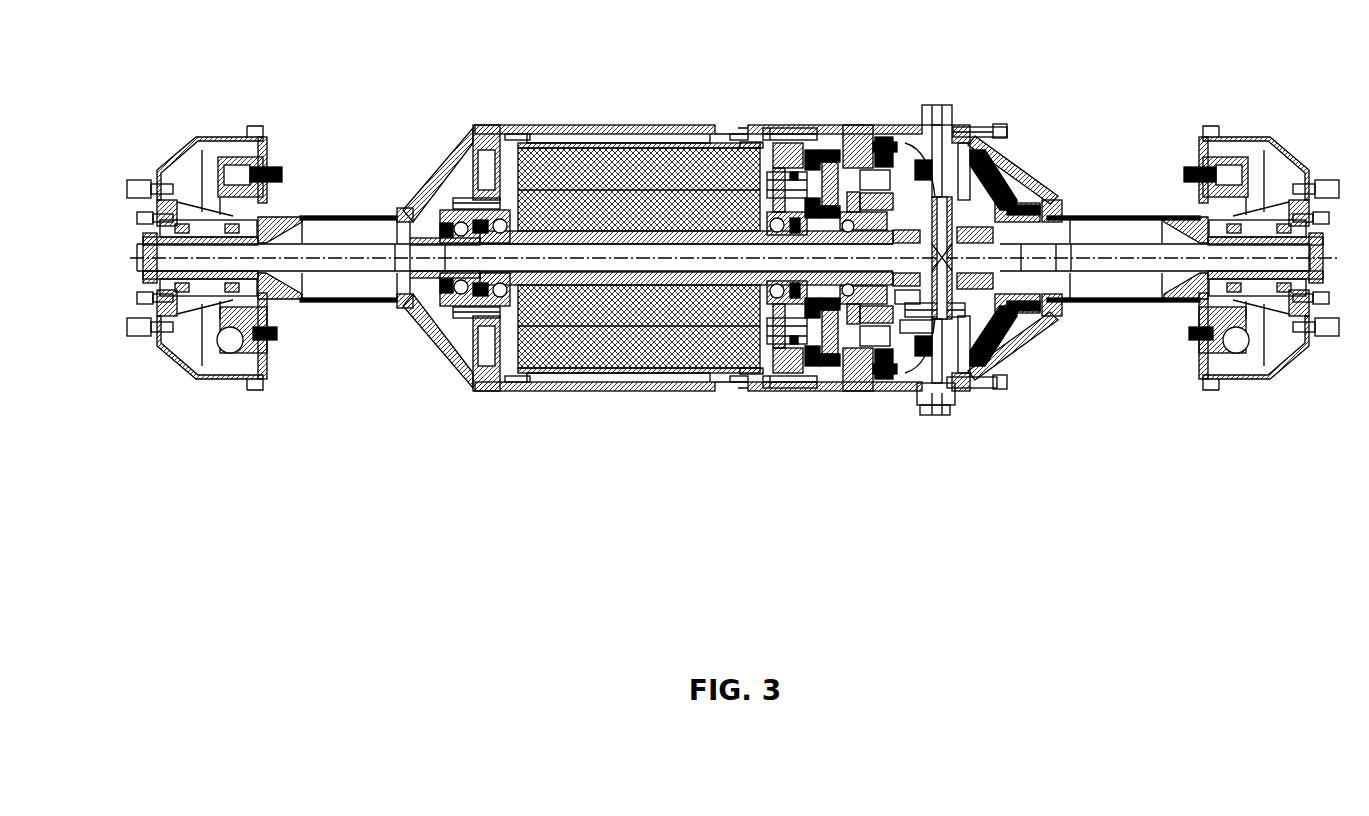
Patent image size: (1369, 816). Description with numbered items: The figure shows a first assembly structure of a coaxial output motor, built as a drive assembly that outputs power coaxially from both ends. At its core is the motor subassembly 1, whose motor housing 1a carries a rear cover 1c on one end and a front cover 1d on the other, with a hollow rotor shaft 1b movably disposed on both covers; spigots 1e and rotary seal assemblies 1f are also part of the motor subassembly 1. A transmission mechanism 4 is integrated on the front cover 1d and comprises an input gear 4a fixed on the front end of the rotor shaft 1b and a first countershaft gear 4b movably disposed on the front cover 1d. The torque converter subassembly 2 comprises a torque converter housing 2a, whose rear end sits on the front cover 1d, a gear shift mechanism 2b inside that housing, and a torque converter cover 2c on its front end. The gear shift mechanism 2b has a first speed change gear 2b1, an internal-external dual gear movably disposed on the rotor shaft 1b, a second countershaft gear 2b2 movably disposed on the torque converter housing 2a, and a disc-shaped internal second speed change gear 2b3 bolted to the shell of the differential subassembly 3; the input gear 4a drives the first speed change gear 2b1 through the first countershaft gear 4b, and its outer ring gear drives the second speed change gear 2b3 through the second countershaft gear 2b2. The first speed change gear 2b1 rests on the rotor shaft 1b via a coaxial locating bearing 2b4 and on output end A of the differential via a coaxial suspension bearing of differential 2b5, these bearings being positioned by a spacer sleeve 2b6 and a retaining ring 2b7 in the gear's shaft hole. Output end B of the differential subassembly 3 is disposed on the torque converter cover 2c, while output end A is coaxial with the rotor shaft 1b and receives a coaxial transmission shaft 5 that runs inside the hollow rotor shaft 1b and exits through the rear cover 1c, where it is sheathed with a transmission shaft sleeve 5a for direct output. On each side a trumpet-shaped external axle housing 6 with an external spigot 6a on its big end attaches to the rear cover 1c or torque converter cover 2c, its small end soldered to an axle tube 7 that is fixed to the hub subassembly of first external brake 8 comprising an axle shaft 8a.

The motor subassembly 1 is at (587, 147).
The motor housing 1a is at (613, 125).
The rotor shaft 1b is at (748, 140).
The rear cover 1c is at (482, 172).
The front cover 1d is at (790, 130).
The spigots 1e is at (490, 135).
The rotary seal assemblies 1f is at (528, 388).
The torque converter subassembly 2 is at (968, 128).
The torque converter housing 2a is at (843, 133).
The gear shift mechanism 2b is at (903, 137).
The first speed change gear 2b1 is at (827, 377).
The second countershaft gear 2b2 is at (875, 383).
The second speed change gear 2b3 is at (897, 373).
The coaxial locating bearing 2b4 is at (800, 383).
The coaxial suspension bearing of differential 2b5 is at (855, 373).
The spacer sleeve 2b6 is at (873, 130).
The retaining ring 2b7 is at (892, 133).
The torque converter cover 2c is at (1003, 133).
The differential subassembly 3 is at (1003, 185).
The transmission mechanism 4 is at (820, 133).
The input gear 4a is at (767, 383).
The first countershaft gear 4b is at (785, 385).
The coaxial transmission shaft 5 is at (573, 263).
The transmission shaft sleeve 5a is at (433, 237).
The external axle housing 6 is at (432, 185).
The external spigot 6a is at (492, 383).
The axle tube 7 is at (360, 302).
The hub subassembly of first external brake 8 is at (270, 302).
The axle shaft 8a is at (313, 263).
The output end A of the differential subassembly A is at (1020, 200).
The output end B of the differential subassembly B is at (937, 133).